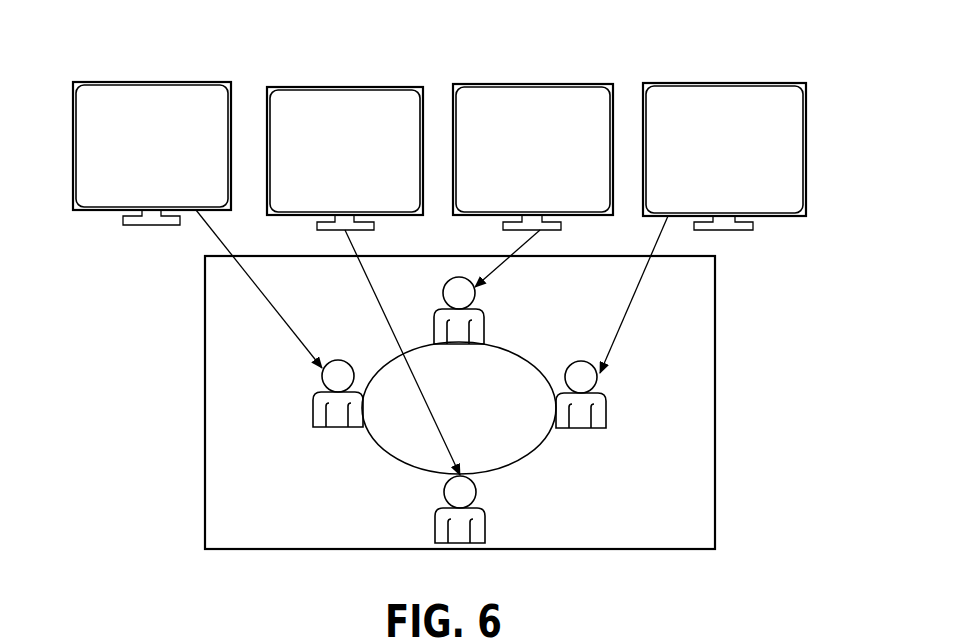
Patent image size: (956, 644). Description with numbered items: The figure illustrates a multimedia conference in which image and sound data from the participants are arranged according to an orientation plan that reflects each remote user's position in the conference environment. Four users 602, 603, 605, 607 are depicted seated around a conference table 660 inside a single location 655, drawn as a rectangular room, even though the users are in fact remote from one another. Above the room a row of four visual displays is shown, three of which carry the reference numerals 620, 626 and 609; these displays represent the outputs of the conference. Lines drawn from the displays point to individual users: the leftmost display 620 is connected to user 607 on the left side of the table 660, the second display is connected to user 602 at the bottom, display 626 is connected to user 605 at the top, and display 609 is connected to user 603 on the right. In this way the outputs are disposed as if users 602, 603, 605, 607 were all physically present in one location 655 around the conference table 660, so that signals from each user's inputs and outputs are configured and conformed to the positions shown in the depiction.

The display device 620 is at (130, 85).
The display device 626 is at (530, 84).
The display device 609 is at (806, 113).
The location 655 is at (715, 360).
The conference table 660 is at (518, 355).
The user 607 is at (312, 395).
The user 605 is at (483, 312).
The user 603 is at (607, 408).
The user 602 is at (484, 525).